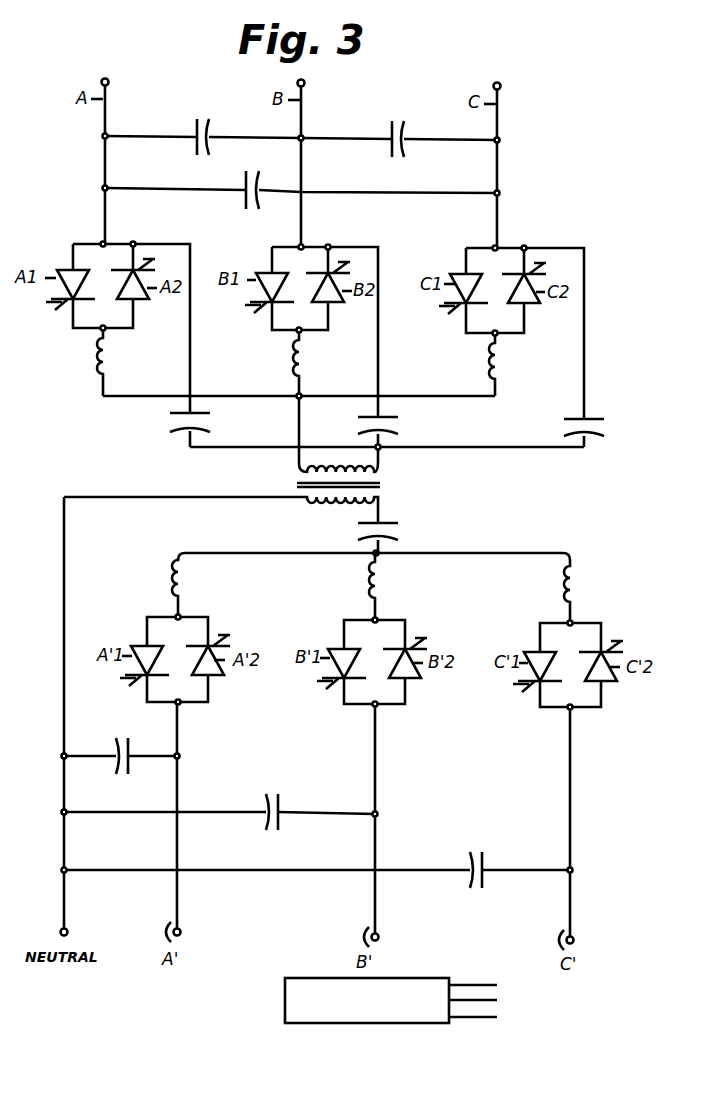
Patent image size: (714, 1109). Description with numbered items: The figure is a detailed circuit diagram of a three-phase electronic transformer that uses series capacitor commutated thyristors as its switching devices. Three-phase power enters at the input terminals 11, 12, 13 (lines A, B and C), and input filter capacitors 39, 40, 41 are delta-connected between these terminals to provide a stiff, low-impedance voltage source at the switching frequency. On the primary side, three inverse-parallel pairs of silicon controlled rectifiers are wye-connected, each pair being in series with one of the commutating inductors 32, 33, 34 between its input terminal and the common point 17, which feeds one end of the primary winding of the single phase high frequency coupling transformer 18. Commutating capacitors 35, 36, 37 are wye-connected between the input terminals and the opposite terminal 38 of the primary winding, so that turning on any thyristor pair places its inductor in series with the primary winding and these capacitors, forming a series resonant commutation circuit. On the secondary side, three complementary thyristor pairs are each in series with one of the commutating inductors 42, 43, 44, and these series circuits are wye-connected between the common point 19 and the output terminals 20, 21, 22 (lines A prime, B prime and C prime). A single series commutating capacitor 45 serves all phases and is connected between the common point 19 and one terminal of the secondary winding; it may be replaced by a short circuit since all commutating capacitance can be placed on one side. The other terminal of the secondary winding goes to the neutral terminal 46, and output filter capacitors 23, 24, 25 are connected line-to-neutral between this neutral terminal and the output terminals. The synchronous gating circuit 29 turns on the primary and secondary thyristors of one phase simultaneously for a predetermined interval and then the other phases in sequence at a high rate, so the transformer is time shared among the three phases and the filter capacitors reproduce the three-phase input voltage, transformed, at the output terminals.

The input terminal 11 is at (109, 82).
The input terminal 12 is at (305, 83).
The input terminal 13 is at (501, 86).
The common point 17 is at (300, 396).
The single phase high frequency coupling transformer 18 is at (318, 466).
The common point 19 is at (380, 555).
The output terminal 20 is at (181, 930).
The output terminal 21 is at (379, 935).
The output terminal 22 is at (574, 938).
The output filter capacitor 23 is at (130, 752).
The output filter capacitor 24 is at (282, 806).
The output filter capacitor 25 is at (487, 864).
The synchronous gating circuit 29 is at (300, 980).
The commutating inductor 32 is at (95, 363).
The commutating inductor 33 is at (291, 364).
The commutating inductor 34 is at (488, 367).
The commutating capacitor 35 is at (205, 413).
The commutating capacitor 36 is at (390, 417).
The commutating capacitor 37 is at (592, 419).
The terminal of primary winding 38 is at (380, 448).
The input filter capacitor 39 is at (195, 130).
The input filter capacitor 40 is at (390, 132).
The input filter capacitor 41 is at (245, 205).
The commutating inductor 42 is at (166, 583).
The commutating inductor 43 is at (366, 586).
The commutating inductor 44 is at (564, 592).
The series commutating capacitor 45 is at (392, 525).
The neutral terminal 46 is at (60, 932).